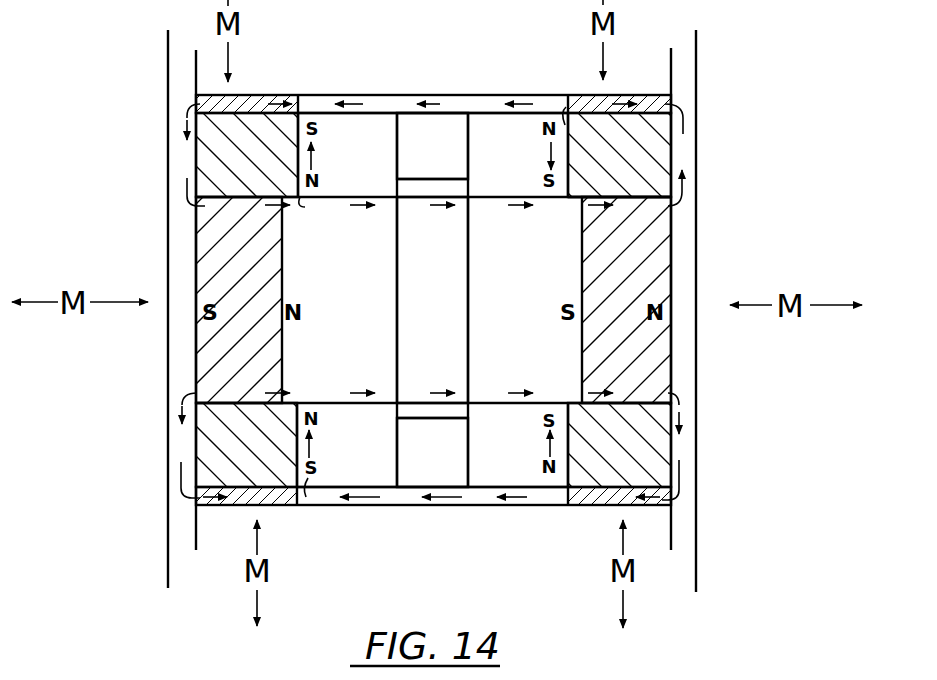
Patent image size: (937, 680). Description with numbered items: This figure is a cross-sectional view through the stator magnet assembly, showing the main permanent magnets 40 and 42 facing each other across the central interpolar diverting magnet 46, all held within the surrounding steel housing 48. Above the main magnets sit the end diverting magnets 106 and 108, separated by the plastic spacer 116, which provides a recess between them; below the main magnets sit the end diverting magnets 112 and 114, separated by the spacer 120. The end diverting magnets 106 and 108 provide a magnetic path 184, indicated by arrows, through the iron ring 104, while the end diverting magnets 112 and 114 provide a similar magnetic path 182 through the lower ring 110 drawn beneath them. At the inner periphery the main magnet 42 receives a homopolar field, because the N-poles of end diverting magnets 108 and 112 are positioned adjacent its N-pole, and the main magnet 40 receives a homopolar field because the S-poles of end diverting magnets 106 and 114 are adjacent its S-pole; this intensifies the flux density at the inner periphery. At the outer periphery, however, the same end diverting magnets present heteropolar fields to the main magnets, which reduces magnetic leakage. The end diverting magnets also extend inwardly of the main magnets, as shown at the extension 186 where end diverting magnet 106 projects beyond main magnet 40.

The main magnet 40 is at (651, 368).
The main magnet 42 is at (237, 243).
The interpolar diverting magnet 46 is at (455, 265).
The steel housing 48 is at (183, 362).
The iron ring 104 is at (315, 91).
The end diverting magnet 106 is at (637, 152).
The end diverting magnet 108 is at (229, 157).
The lower end plate 110 is at (527, 508).
The end diverting magnet 112 is at (228, 440).
The end diverting magnet 114 is at (651, 452).
The spacer 116 is at (447, 130).
The spacer 120 is at (415, 467).
The magnetic path 182 is at (450, 508).
The magnetic path 184 is at (443, 93).
The extension 186 is at (568, 201).